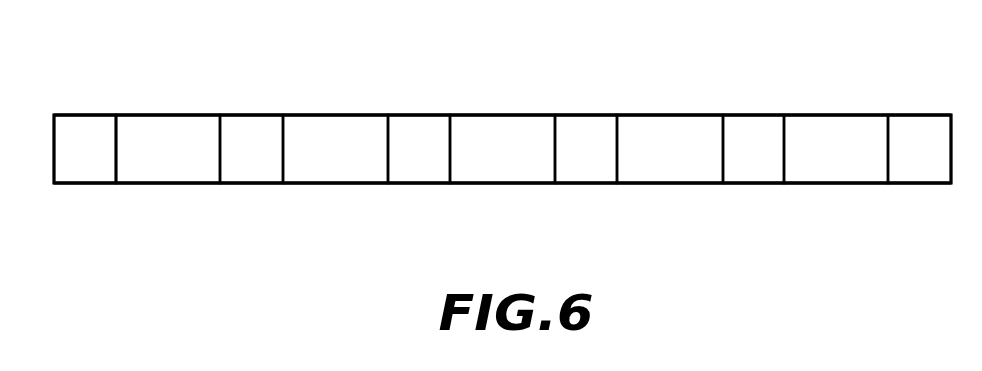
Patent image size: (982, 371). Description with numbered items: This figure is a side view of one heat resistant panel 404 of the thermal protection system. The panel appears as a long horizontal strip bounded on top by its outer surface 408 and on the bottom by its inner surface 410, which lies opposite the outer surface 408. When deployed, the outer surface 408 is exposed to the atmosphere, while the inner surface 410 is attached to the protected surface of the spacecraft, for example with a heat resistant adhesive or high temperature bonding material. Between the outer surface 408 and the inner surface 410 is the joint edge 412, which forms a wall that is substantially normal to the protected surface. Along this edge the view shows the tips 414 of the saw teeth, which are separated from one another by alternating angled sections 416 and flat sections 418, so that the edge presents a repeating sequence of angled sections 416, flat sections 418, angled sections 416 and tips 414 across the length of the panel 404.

The heat resistant panel 404 is at (502, 126).
The outer surface 408 is at (348, 115).
The inner surface 410 is at (348, 183).
The joint edge 412 is at (132, 140).
The tips of the saw teeth 414 is at (353, 161).
The angled sections 416 is at (103, 161).
The flat sections 418 is at (198, 161).